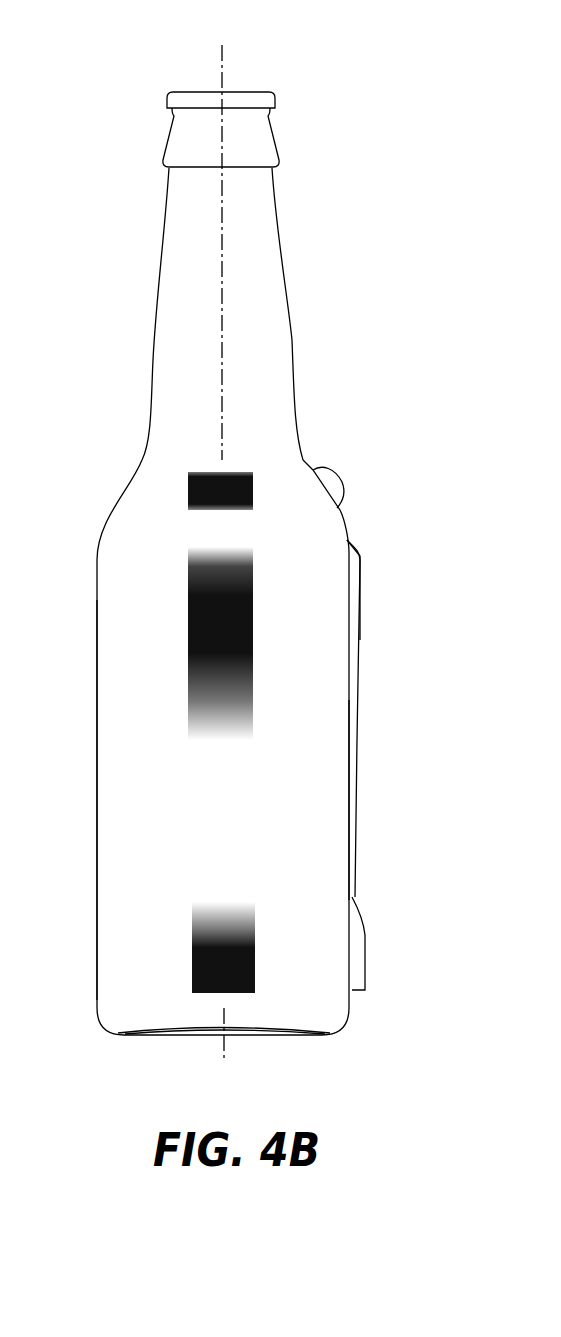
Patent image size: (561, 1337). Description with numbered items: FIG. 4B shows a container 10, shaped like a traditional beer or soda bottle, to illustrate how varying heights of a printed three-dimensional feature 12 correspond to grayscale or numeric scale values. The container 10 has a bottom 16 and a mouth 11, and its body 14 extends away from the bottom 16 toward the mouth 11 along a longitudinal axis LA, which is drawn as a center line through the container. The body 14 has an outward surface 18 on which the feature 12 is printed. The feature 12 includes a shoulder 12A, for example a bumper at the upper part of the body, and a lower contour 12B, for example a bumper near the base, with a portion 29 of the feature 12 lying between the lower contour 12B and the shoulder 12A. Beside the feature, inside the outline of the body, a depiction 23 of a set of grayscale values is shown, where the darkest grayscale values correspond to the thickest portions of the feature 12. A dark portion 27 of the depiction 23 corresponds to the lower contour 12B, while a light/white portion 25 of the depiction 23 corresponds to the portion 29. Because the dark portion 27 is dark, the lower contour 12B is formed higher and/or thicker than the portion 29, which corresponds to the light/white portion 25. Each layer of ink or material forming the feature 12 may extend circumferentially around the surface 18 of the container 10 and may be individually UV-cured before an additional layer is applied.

The container 10 is at (78, 205).
The mouth 11 is at (240, 92).
The longitudinal axis LA is at (220, 62).
The body 14 is at (148, 290).
The surface 18 is at (290, 343).
The bottom 16 is at (170, 1035).
The depiction 23 is at (165, 647).
The dark portion 27 is at (255, 960).
The light/white portion 25 is at (252, 800).
The portion 29 is at (353, 868).
The 3D feature 12 is at (392, 703).
The shoulder 12A is at (362, 630).
The lower contour 12B is at (367, 958).